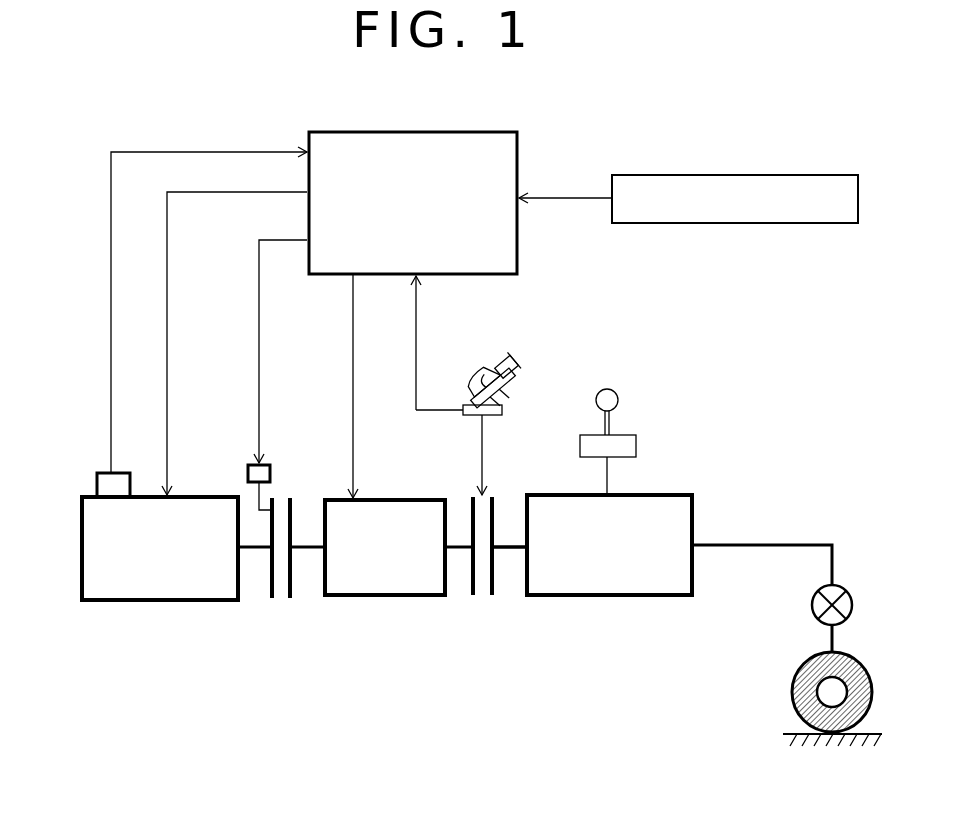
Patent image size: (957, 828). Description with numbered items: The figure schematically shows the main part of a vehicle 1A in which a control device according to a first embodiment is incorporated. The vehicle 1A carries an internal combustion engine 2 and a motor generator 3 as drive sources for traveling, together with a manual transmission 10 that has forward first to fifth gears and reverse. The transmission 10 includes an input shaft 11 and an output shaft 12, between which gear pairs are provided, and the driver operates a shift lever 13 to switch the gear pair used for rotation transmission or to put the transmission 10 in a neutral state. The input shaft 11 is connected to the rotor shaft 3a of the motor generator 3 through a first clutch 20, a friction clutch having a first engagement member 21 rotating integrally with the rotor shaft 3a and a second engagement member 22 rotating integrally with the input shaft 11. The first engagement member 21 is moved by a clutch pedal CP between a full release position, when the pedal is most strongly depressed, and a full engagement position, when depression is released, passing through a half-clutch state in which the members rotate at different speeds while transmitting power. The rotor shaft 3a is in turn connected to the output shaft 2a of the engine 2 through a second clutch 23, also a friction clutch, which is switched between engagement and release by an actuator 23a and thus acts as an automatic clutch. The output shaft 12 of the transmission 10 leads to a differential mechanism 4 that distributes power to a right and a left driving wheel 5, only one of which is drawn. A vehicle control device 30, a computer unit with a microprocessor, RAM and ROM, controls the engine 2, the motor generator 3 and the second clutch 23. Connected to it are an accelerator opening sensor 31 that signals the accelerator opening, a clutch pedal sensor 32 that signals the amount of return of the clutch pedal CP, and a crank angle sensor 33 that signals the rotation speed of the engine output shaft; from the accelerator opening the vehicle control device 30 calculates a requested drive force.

The vehicle 1A is at (67, 162).
The engine 2 is at (118, 603).
The output shaft of the engine 2a is at (260, 552).
The motor generator 3 is at (383, 597).
The rotor shaft 3a is at (308, 552).
The second clutch 23 is at (281, 606).
The actuator 23a is at (248, 470).
The first clutch 20 is at (483, 606).
The first engagement member 21 is at (470, 580).
The second engagement member 22 is at (496, 598).
The input shaft 11 is at (500, 552).
The manual transmission 10 is at (606, 597).
The output shaft 12 is at (733, 548).
The differential mechanism 4 is at (812, 612).
The driving wheel 5 is at (790, 695).
The shift lever 13 is at (612, 421).
The vehicle control device 30 is at (416, 130).
The accelerator opening sensor 31 is at (860, 198).
The clutch pedal sensor 32 is at (495, 416).
The crank angle sensor 33 is at (97, 484).
The clutch pedal CP is at (470, 378).